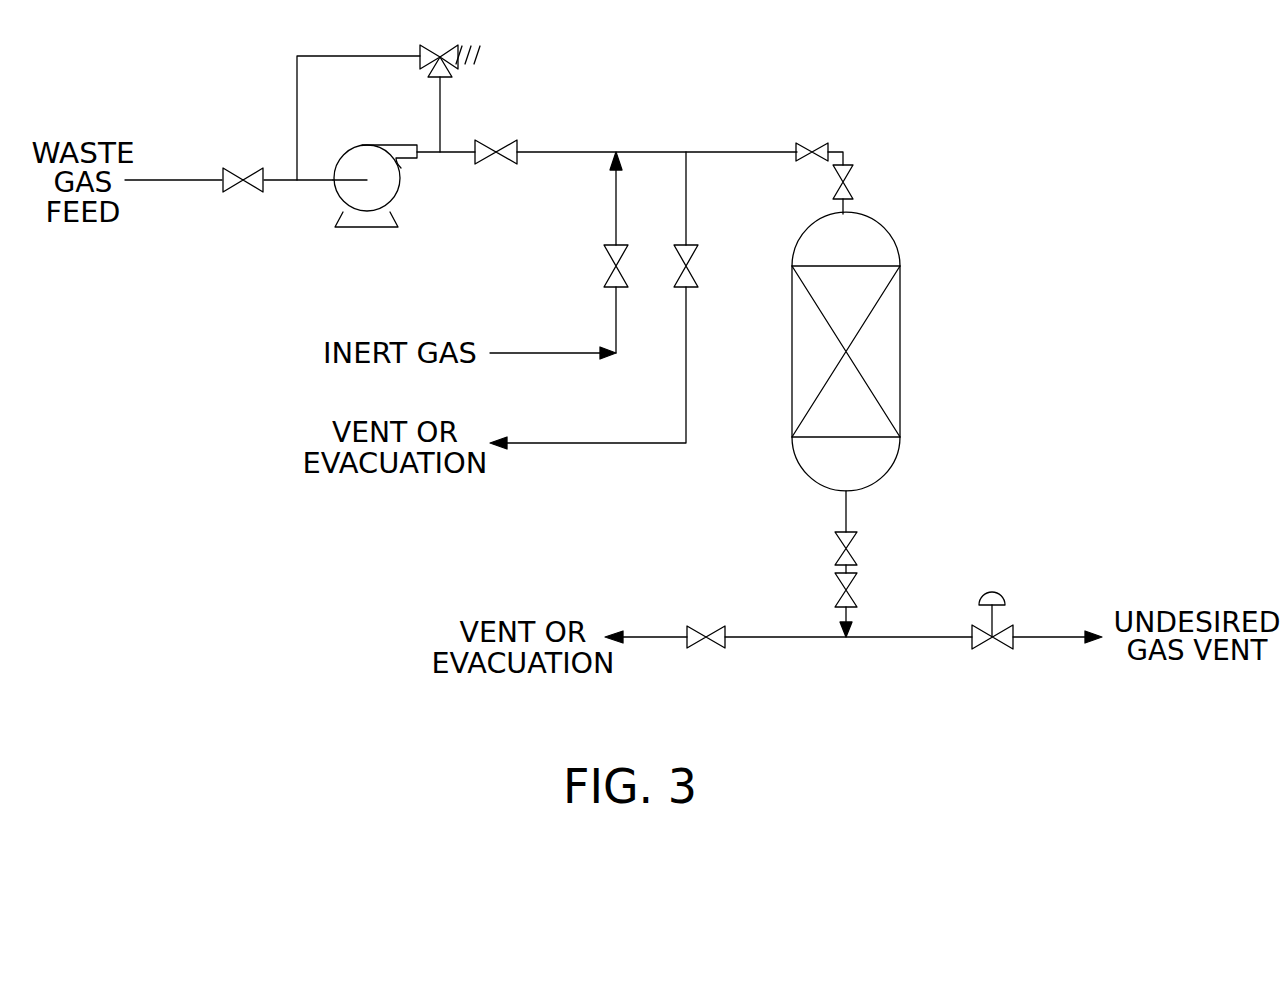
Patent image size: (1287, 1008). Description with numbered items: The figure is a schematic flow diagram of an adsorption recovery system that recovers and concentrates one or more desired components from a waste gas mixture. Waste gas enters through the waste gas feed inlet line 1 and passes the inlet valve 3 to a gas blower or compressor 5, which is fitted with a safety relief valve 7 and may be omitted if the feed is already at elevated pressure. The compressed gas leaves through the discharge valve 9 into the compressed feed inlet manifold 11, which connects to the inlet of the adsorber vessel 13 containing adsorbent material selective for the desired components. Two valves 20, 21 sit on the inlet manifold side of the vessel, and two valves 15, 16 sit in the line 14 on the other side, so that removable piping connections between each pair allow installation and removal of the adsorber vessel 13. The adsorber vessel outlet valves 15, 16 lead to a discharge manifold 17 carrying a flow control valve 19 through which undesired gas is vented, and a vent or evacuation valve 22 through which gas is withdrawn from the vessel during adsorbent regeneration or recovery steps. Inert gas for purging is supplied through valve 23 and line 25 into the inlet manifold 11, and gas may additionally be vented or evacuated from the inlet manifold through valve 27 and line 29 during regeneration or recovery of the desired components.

The waste gas feed inlet line 1 is at (193, 178).
The inlet valve 3 is at (240, 193).
The gas blower or compressor 5 is at (398, 193).
The safety relief valve 7 is at (421, 50).
The discharge valve 9 is at (494, 145).
The compressed feed inlet manifold 11 is at (739, 151).
The adsorber vessel 13 is at (899, 340).
The line 14 is at (839, 517).
The adsorber vessel outlet valve 15 is at (857, 540).
The adsorber vessel outlet valve 16 is at (857, 601).
The discharge manifold 17 is at (906, 638).
The flow control valve 19 is at (992, 650).
The valve 20 is at (800, 140).
The valve 21 is at (855, 191).
The vent or evacuation valve 22 is at (712, 650).
The valve 23 is at (603, 278).
The line 25 is at (616, 210).
The valve 27 is at (696, 278).
The line 29 is at (687, 388).